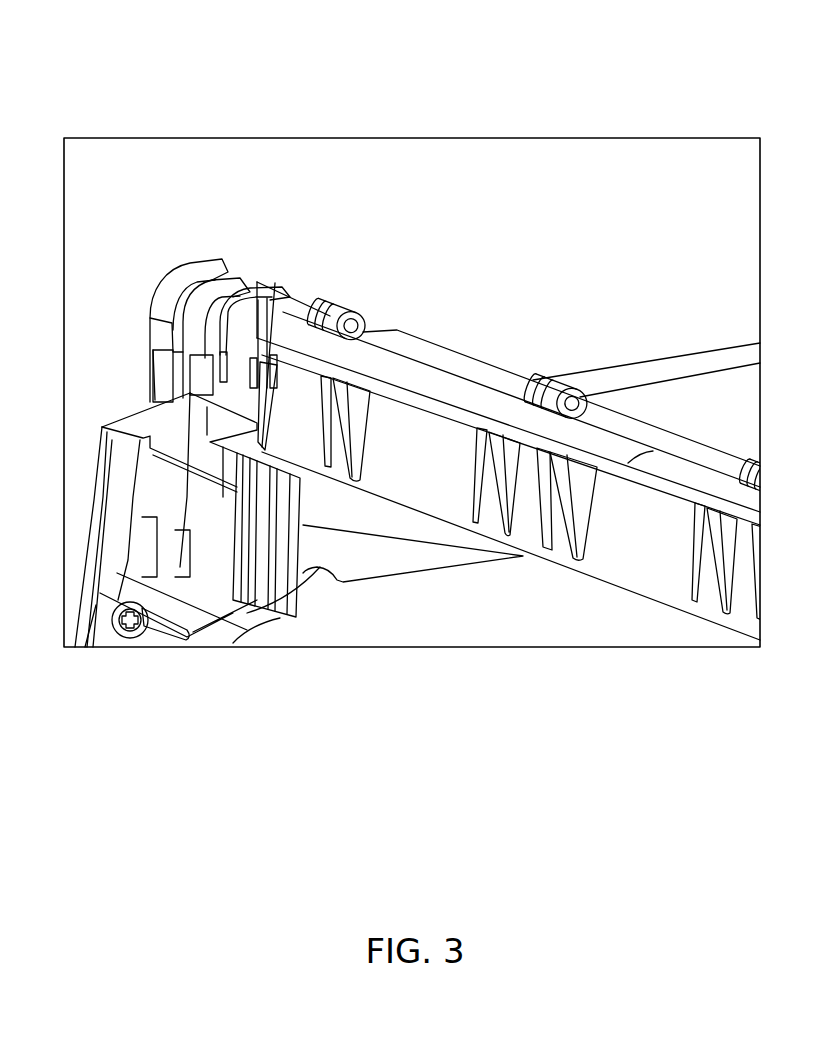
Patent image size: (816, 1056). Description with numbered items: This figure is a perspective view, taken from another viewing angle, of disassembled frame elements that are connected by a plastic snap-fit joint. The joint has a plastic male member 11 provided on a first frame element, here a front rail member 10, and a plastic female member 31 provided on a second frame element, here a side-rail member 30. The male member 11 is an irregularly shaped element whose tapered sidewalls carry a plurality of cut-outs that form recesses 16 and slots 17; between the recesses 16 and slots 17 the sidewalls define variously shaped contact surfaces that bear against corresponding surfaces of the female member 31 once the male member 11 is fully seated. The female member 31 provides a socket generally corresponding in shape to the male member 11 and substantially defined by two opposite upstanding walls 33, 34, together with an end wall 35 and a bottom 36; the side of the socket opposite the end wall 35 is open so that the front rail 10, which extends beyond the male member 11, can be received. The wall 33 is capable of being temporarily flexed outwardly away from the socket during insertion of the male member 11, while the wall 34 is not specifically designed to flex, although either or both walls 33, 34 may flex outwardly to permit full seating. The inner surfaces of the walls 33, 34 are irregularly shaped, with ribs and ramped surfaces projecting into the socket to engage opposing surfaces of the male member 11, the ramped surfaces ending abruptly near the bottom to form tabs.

The front rail member 10 is at (472, 368).
The male member 11 is at (120, 268).
The recesses 16 is at (192, 270).
The slots 17 is at (280, 287).
The side-rail member 30 is at (632, 378).
The female member 31 is at (102, 537).
The wall 33 is at (202, 543).
The wall 34 is at (305, 527).
The end wall 35 is at (160, 423).
The connector block 36 is at (278, 617).